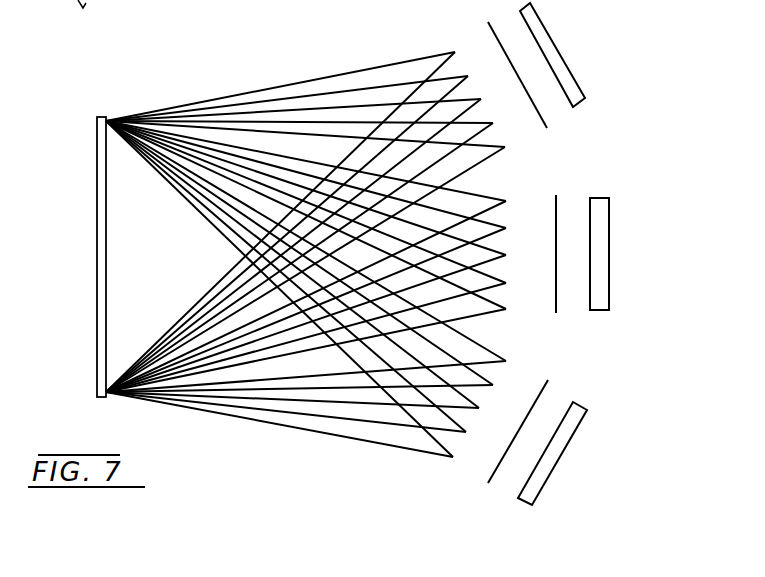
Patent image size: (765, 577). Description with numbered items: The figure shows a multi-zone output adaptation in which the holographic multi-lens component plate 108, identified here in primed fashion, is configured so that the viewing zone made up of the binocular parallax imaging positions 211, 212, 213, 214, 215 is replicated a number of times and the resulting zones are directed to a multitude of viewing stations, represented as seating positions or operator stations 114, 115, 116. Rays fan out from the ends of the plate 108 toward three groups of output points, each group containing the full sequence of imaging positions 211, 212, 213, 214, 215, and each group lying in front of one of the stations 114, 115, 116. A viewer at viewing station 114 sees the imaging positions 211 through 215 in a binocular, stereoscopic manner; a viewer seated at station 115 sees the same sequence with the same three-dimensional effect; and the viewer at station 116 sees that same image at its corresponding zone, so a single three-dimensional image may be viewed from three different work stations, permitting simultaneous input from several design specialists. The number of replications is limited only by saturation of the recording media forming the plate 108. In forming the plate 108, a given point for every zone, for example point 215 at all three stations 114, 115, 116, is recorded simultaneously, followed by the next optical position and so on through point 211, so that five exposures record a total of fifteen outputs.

The holographic multi-lens component plate 108 is at (103, 117).
The viewing station 114 is at (560, 62).
The viewing station 115 is at (603, 258).
The viewing station 116 is at (550, 463).
The imaging position 211 is at (323, 294).
The imaging position 212 is at (323, 274).
The imaging position 213 is at (323, 251).
The imaging position 214 is at (323, 228).
The imaging position 215 is at (323, 214).